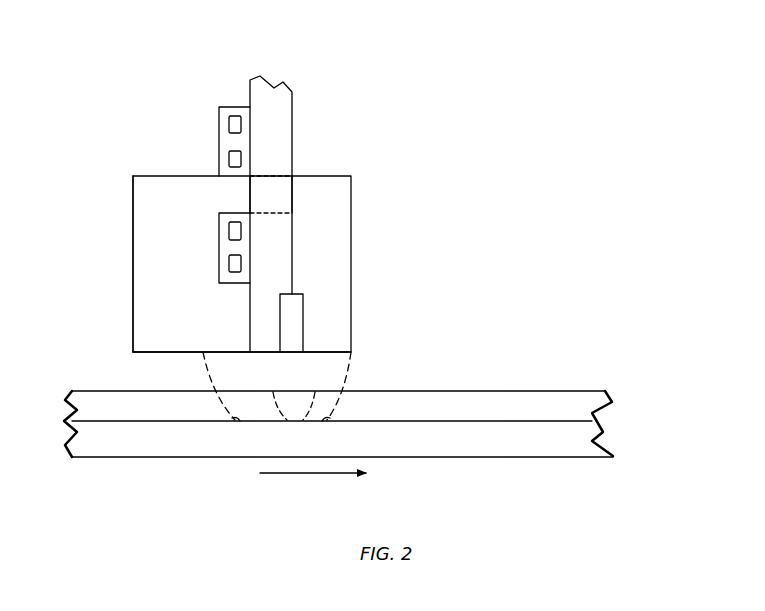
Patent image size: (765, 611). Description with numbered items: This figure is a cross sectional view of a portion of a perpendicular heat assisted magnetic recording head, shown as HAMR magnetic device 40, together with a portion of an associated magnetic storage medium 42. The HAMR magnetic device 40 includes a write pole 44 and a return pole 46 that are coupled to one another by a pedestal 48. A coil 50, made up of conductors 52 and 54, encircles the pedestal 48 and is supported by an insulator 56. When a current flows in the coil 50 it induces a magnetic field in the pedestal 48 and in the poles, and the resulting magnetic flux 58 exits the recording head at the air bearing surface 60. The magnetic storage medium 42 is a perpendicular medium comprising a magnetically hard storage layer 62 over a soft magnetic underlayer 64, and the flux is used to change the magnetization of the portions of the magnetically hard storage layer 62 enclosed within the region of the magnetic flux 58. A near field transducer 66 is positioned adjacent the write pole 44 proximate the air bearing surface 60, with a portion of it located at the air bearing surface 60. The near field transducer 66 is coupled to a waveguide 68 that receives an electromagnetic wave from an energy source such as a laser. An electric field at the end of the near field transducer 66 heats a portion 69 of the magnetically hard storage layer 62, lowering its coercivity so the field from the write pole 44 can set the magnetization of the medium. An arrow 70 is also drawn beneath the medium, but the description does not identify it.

The welding system 40 is at (437, 110).
The workpiece 42 is at (607, 366).
The housing 44 is at (330, 218).
The housing body portion 46 is at (155, 292).
The wire passage 48 is at (277, 195).
The wire feeder 50 is at (212, 95).
The lower drive rollers 52 is at (229, 230).
The upper drive rollers 54 is at (229, 123).
The feeder housing 56 is at (228, 108).
The weld puddle 58 is at (344, 380).
The bottom surface of housing 60 is at (147, 352).
The upper plate 62 is at (567, 412).
The lower plate 64 is at (562, 433).
The contact tip 66 is at (302, 313).
The welding wire 68 is at (268, 142).
The weld nugget 69 is at (277, 412).
The travel direction 70 is at (312, 477).